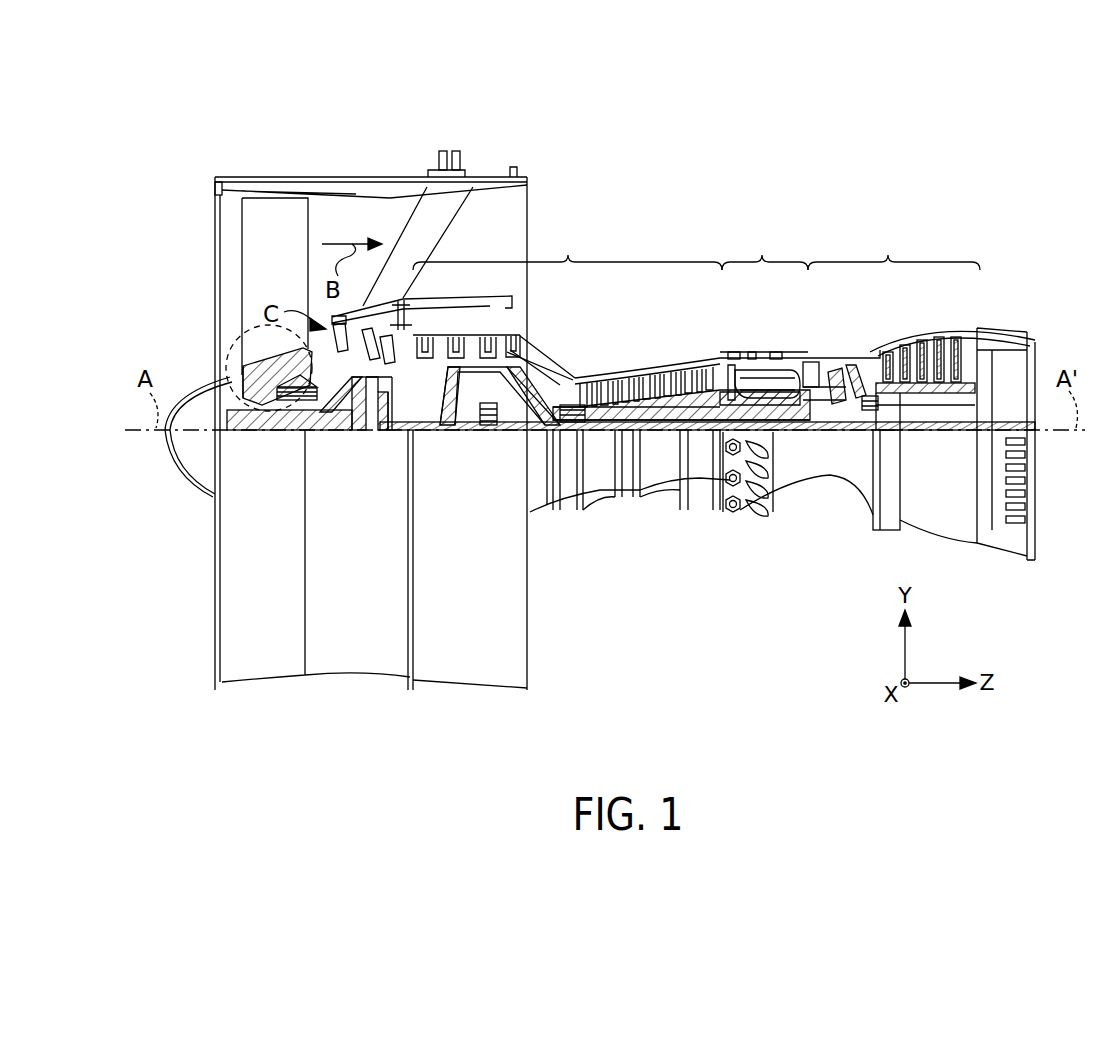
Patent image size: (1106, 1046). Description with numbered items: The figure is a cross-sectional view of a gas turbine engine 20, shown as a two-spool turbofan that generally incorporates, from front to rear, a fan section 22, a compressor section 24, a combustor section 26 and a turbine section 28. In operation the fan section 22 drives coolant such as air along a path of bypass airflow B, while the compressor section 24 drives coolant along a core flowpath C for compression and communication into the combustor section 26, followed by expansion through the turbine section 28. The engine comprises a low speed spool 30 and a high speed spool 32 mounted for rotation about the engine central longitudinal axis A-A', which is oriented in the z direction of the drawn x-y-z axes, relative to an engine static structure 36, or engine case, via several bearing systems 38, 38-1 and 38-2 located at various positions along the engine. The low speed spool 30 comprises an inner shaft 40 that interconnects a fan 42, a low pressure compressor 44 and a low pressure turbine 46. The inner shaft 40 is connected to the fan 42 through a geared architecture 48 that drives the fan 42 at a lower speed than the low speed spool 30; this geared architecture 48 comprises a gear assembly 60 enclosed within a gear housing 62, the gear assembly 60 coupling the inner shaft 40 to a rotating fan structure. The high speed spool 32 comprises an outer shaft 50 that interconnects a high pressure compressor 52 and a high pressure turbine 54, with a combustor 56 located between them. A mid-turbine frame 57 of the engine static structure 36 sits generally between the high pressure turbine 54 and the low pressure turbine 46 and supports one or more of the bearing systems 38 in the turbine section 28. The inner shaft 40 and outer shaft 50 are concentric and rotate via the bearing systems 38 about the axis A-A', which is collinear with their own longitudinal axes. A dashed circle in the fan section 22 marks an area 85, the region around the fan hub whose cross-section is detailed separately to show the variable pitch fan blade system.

The gas turbine engine 20 is at (805, 166).
The fan section 22 is at (390, 162).
The compressor section 24 is at (567, 302).
The combustor section 26 is at (764, 291).
The turbine section 28 is at (921, 291).
The low speed spool 30 is at (662, 448).
The high speed spool 32 is at (705, 395).
The engine static structure 36 is at (190, 706).
The bearing system 38 is at (845, 432).
The bearing system 38-1 is at (305, 432).
The bearing system 38-2 is at (490, 432).
The inner shaft 40 is at (548, 432).
The fan 42 is at (278, 293).
The low pressure compressor 44 is at (470, 350).
The low pressure turbine 46 is at (905, 330).
The geared architecture 48 is at (368, 462).
The outer shaft 50 is at (755, 432).
The high pressure compressor 52 is at (660, 374).
The high pressure turbine 54 is at (815, 362).
The combustor 56 is at (775, 368).
The mid-turbine frame 57 is at (846, 365).
The gear assembly 60 is at (388, 402).
The gear housing 62 is at (388, 382).
The area 85 is at (232, 350).